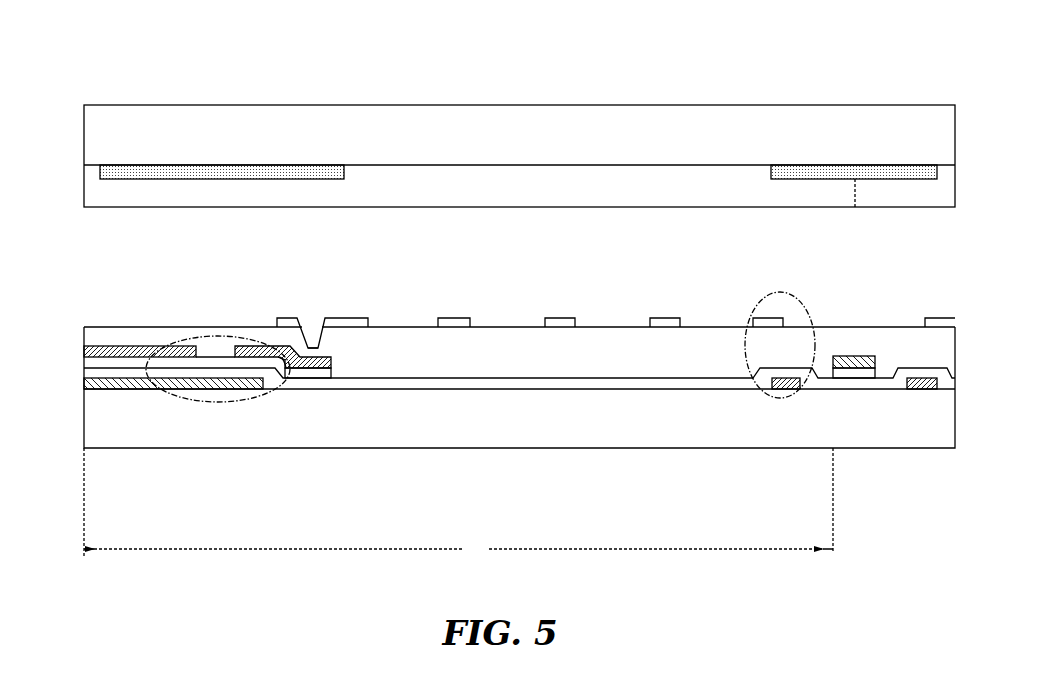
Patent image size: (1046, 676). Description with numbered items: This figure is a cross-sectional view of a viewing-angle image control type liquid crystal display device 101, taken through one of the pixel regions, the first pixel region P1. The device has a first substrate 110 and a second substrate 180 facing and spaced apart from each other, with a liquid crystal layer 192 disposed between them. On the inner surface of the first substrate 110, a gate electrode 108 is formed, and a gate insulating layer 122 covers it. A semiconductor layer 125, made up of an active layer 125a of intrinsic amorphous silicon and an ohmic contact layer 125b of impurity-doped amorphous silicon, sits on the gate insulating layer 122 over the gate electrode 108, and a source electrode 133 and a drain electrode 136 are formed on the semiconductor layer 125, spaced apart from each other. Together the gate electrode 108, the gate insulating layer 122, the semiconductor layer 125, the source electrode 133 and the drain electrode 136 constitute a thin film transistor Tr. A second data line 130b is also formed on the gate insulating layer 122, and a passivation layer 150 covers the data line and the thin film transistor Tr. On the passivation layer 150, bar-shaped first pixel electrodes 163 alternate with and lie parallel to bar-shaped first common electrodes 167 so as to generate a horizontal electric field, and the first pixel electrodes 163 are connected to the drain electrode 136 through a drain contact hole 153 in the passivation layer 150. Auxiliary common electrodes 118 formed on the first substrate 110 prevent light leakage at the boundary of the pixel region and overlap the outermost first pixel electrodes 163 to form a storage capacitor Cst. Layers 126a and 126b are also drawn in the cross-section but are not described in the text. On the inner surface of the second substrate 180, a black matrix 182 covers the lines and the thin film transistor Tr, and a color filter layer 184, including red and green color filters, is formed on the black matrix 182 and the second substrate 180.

The VIC type LCD device 101 is at (900, 62).
The second substrate 180 is at (952, 140).
The black matrix 182 is at (275, 165).
The color filter layer 184 is at (398, 190).
The liquid crystal layer 192 is at (112, 259).
The first substrate 110 is at (919, 425).
The passivation layer 150 is at (430, 345).
The gate insulating layer 122 is at (648, 378).
The gate electrode 108 is at (212, 389).
The source electrode 133 is at (186, 345).
The drain electrode 136 is at (248, 345).
The semiconductor layer 125 is at (314, 482).
The active layer 125a is at (262, 378).
The ohmic contact layer 125b is at (290, 372).
The first pixel electrodes 163 is at (355, 318).
The first common electrodes 167 is at (452, 318).
The drain contact hole 153 is at (312, 316).
The auxiliary common electrodes 118 is at (765, 380).
The second data line 130b is at (802, 390).
The first pad electrode layer 126a is at (851, 376).
The second pad electrode layer 126b is at (870, 368).
The thin film transistor Tr is at (172, 400).
The storage capacitor Cst is at (808, 317).
The first pixel region P1 is at (518, 510).